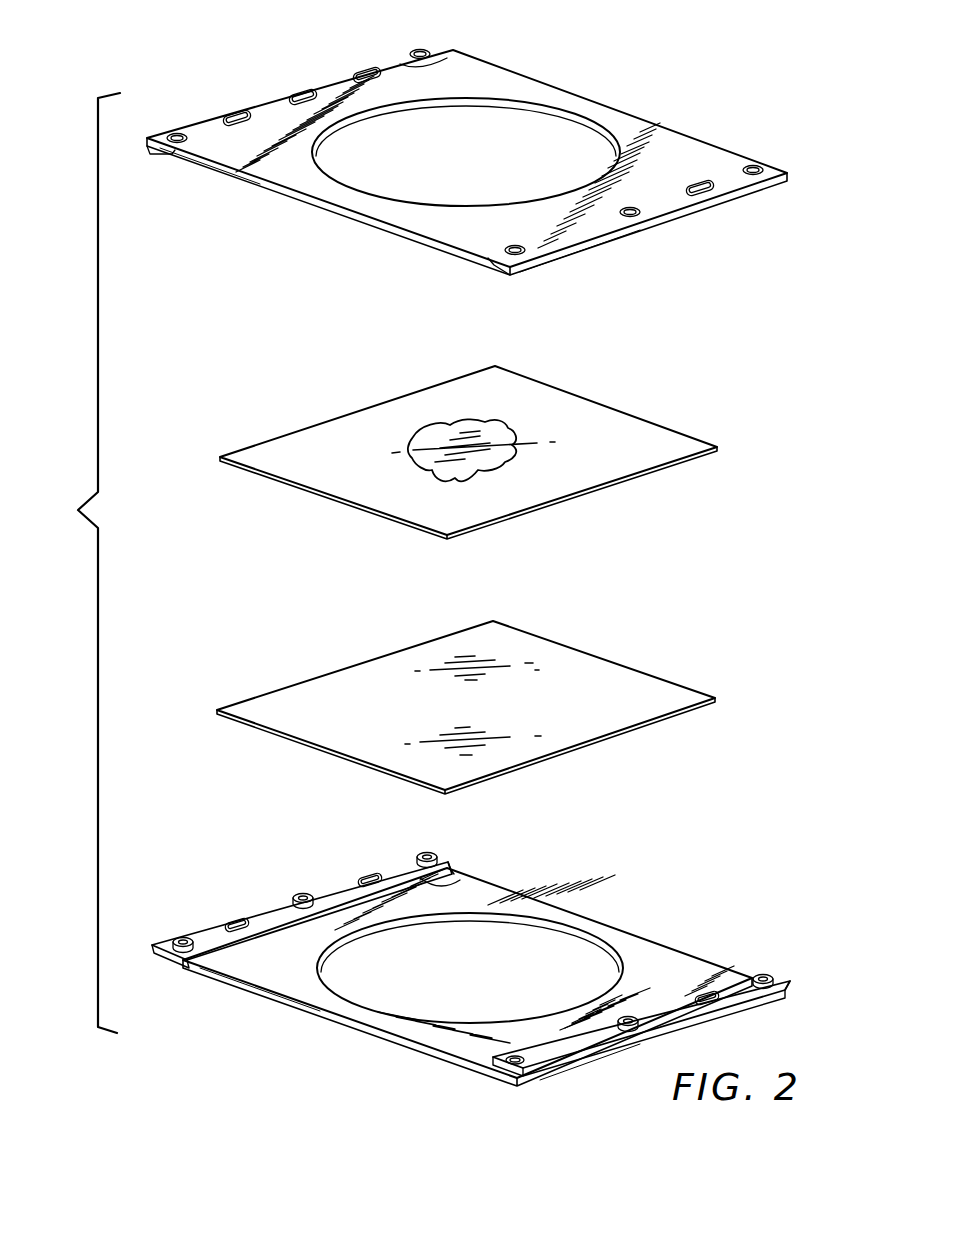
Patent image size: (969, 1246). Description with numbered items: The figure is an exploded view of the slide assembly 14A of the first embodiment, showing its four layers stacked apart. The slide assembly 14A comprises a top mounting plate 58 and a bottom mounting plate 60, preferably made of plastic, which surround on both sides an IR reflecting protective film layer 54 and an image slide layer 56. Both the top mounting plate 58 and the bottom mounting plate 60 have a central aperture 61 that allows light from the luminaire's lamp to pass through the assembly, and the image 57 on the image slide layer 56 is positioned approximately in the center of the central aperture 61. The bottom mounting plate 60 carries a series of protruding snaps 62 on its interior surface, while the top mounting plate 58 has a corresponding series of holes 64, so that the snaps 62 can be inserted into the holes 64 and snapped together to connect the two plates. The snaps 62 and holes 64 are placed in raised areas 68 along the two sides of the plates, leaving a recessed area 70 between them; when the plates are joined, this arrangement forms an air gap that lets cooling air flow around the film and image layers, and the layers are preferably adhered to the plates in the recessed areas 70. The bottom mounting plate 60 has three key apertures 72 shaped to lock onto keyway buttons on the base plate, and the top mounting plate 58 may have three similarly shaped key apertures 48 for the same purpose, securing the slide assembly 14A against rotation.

The slide assembly 14A is at (76, 563).
The key apertures 48 is at (237, 113).
The IR reflecting protective film layer 54 is at (670, 693).
The image slide layer 56 is at (655, 440).
The image 57 is at (505, 423).
The top mounting plate 58 is at (687, 150).
The bottom mounting plate 60 is at (685, 960).
The central aperture 61 is at (533, 147).
The snaps 62 is at (190, 935).
The holes 64 is at (430, 70).
The raised areas 68 is at (163, 153).
The recessed area 70 is at (243, 167).
The key apertures 72 is at (320, 917).